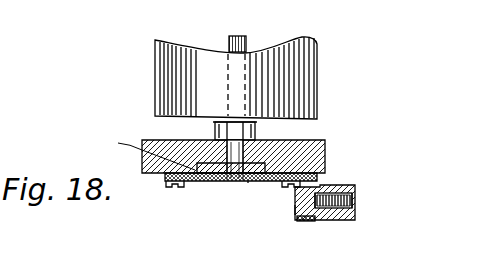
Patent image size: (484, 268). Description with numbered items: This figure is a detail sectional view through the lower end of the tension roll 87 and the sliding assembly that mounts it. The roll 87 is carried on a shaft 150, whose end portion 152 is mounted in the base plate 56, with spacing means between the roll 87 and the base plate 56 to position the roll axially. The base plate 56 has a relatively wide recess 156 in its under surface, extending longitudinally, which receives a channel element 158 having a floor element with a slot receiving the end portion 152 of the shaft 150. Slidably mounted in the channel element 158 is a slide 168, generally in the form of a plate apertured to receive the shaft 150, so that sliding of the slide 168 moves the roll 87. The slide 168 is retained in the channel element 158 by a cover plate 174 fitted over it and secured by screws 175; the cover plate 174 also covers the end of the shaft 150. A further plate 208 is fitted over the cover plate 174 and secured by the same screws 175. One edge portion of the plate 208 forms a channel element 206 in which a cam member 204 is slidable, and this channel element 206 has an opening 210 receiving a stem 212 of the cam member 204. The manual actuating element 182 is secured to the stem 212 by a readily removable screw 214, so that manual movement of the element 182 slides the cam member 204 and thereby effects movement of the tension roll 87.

The tension roll 87 is at (316, 76).
The shaft 150 is at (243, 43).
The end portion of shaft 152 is at (216, 128).
The base plate 56 is at (323, 148).
The recess 156 is at (140, 151).
The channel element 158 is at (222, 186).
The slide 168 is at (213, 183).
The screws 175 is at (168, 188).
The cover plate 174 is at (200, 184).
The plate 208 is at (248, 182).
The opening 210 is at (322, 186).
The screw 214 is at (355, 202).
The manual actuating element 182 is at (343, 219).
The stem 212 is at (322, 214).
The channel element 206 is at (303, 222).
The cam member 204 is at (296, 210).